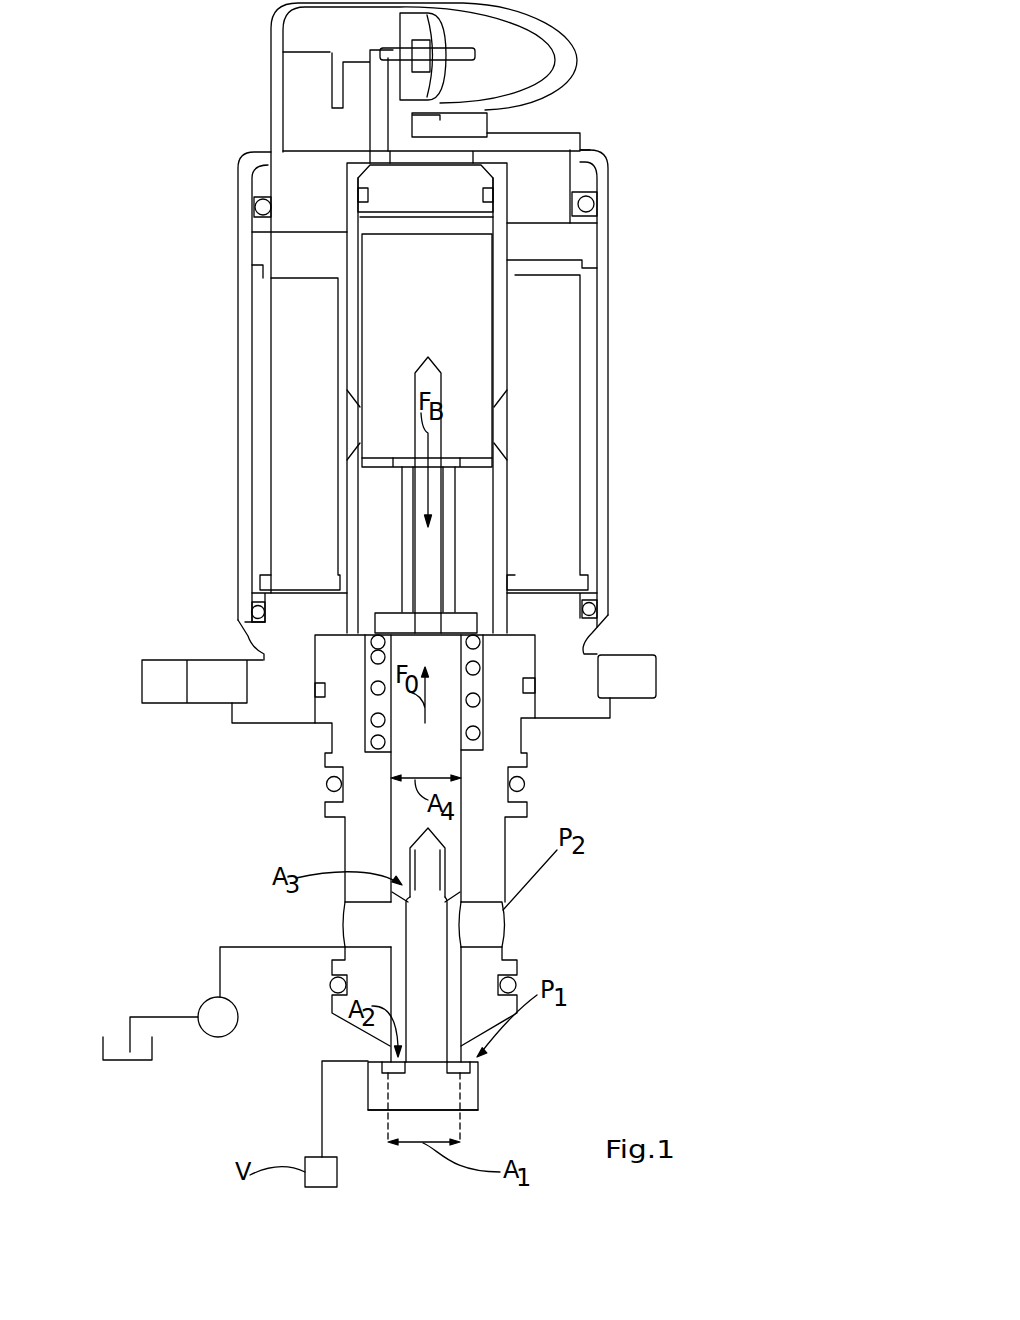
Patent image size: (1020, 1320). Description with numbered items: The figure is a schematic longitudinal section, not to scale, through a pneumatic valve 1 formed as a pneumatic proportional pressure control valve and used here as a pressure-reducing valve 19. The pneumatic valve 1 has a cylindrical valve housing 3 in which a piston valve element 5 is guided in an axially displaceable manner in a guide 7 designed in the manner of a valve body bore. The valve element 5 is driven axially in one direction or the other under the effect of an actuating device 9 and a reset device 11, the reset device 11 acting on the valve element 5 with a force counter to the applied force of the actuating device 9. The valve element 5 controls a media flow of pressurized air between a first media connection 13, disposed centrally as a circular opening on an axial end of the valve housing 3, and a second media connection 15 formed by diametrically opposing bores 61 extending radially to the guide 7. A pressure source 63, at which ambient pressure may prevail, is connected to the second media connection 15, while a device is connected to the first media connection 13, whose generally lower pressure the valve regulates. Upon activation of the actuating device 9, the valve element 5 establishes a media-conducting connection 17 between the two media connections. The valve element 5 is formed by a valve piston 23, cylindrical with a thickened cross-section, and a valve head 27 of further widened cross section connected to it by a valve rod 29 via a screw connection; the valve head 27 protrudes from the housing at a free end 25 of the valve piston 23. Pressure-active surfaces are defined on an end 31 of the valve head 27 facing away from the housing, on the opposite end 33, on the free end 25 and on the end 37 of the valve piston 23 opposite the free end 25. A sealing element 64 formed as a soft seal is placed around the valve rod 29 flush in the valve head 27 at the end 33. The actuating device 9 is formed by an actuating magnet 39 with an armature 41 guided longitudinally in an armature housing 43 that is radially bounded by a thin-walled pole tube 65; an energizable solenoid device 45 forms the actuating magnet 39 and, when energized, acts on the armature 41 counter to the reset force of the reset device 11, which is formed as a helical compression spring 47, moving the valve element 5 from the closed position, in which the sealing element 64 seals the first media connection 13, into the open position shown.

The pneumatic valve 1 is at (748, 378).
The valve housing 3 is at (490, 832).
The piston valve element 5 is at (475, 800).
The guide 7 is at (387, 822).
The actuating device 9 is at (627, 419).
The reset device 11 is at (350, 714).
The first media connection 13 is at (387, 1049).
The second media connection 15 is at (504, 902).
The media-conducting connection 17 is at (455, 967).
The pressure-reducing valve 19 is at (145, 862).
The valve piston 23 is at (452, 790).
The free end 25 is at (396, 915).
The valve head 27 is at (463, 1082).
The valve rod 29 is at (430, 1008).
The end 31 is at (372, 1122).
The end 33 is at (465, 1046).
The end 37 is at (425, 624).
The actuating magnet 39 is at (550, 528).
The armature 41 is at (475, 373).
The armature housing 43 is at (483, 228).
The energizable solenoid device 45 is at (627, 459).
The helical compression spring 47 is at (482, 662).
The bores 61 is at (330, 922).
The pressure source 63 is at (216, 1022).
The sealing element 64 is at (475, 1060).
The pole tube 65 is at (500, 252).